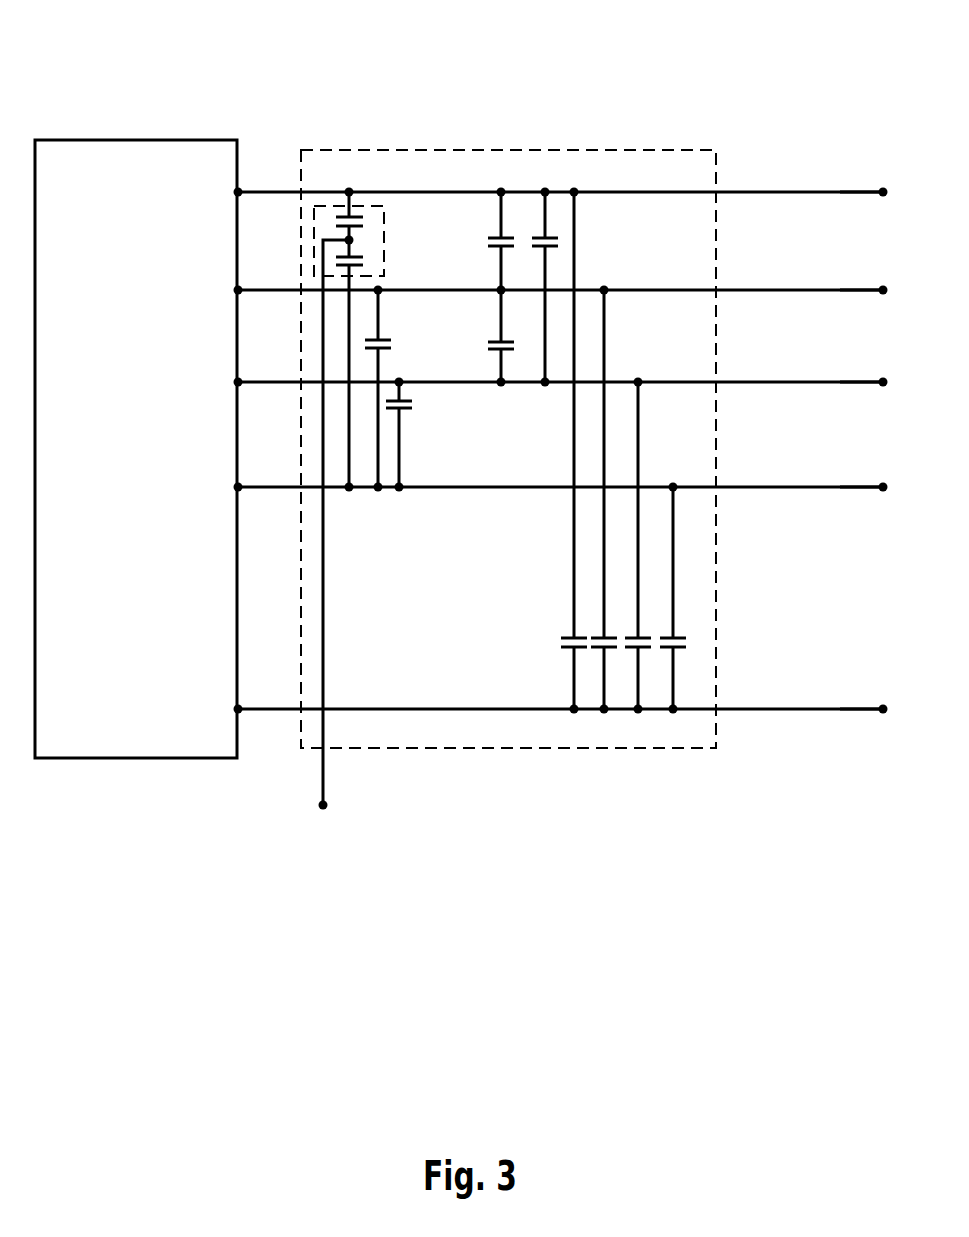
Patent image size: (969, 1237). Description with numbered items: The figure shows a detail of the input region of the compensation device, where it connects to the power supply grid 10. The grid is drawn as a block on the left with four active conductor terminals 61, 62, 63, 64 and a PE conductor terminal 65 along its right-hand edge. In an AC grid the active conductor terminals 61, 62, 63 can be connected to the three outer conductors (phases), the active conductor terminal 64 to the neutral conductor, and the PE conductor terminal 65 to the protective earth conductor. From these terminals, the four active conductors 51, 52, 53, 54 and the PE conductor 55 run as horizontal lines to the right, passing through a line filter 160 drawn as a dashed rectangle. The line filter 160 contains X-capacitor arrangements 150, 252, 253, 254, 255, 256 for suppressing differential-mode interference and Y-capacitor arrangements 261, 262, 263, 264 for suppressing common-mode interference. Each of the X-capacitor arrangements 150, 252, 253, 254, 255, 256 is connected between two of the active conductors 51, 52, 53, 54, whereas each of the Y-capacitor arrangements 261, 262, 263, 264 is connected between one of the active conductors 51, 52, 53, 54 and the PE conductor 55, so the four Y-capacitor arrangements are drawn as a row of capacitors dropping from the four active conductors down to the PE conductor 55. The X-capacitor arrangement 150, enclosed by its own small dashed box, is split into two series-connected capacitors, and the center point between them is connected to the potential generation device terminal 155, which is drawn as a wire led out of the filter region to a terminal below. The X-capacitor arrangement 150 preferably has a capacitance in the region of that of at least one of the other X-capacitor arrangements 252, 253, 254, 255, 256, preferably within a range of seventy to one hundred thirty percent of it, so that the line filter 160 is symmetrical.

The power supply grid 10 is at (140, 140).
The conductor 51 is at (842, 191).
The conductor 52 is at (842, 289).
The conductor 53 is at (842, 381).
The conductor 54 is at (842, 486).
The conductor 55 is at (842, 708).
The active conductor terminal 61 is at (240, 190).
The active conductor terminal 62 is at (240, 288).
The active conductor terminal 63 is at (240, 380).
The active conductor terminal 64 is at (240, 485).
The PE conductor terminal 65 is at (240, 707).
The X-capacitor arrangement 150 is at (370, 206).
The potential generation device terminal 155 is at (322, 806).
The line filter 160 is at (663, 150).
The X-capacitor arrangement 252 is at (387, 338).
The X-capacitor arrangement 253 is at (408, 409).
The X-capacitor arrangement 254 is at (489, 240).
The X-capacitor arrangement 255 is at (490, 343).
The X-capacitor arrangement 256 is at (545, 237).
The Y-capacitor arrangement 261 is at (565, 650).
The Y-capacitor arrangement 262 is at (595, 650).
The Y-capacitor arrangement 263 is at (645, 650).
The Y-capacitor arrangement 264 is at (677, 650).